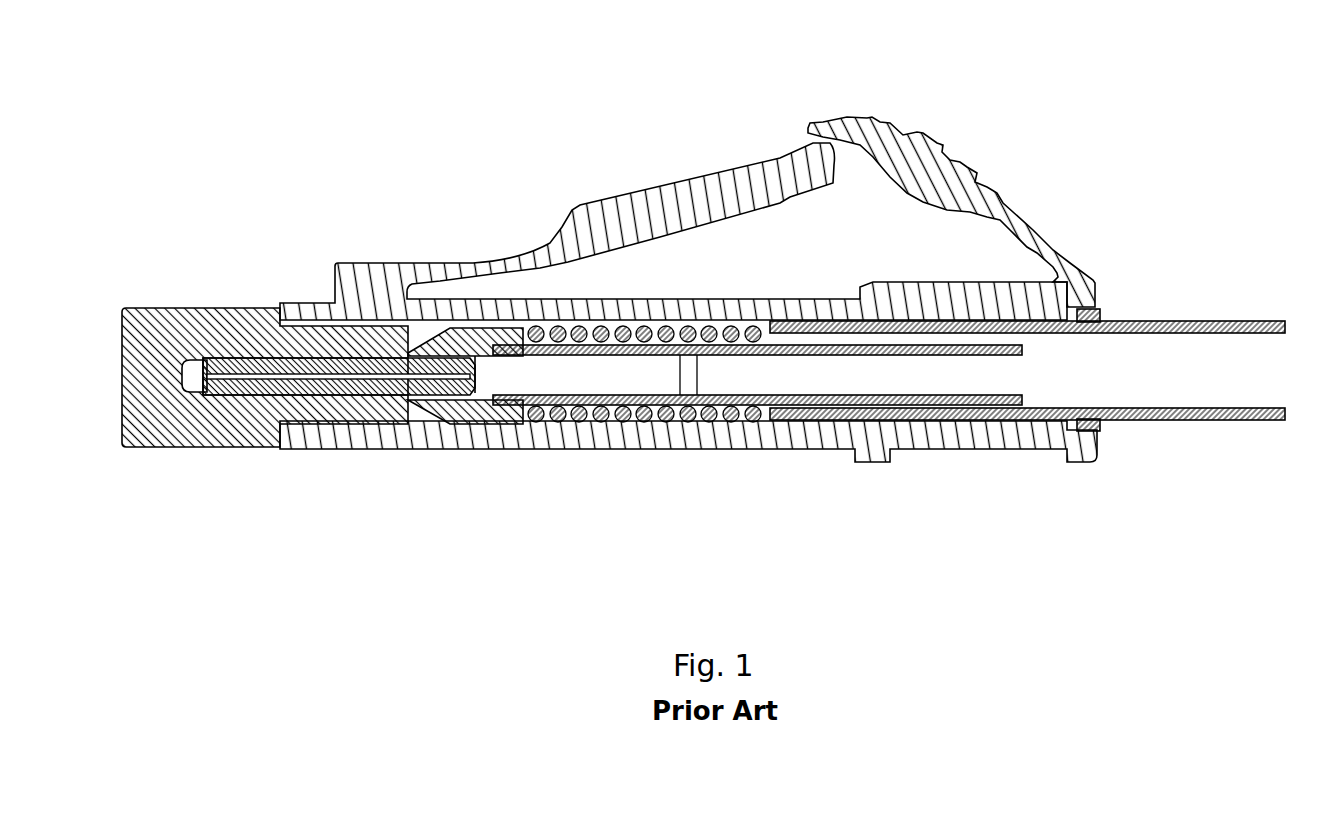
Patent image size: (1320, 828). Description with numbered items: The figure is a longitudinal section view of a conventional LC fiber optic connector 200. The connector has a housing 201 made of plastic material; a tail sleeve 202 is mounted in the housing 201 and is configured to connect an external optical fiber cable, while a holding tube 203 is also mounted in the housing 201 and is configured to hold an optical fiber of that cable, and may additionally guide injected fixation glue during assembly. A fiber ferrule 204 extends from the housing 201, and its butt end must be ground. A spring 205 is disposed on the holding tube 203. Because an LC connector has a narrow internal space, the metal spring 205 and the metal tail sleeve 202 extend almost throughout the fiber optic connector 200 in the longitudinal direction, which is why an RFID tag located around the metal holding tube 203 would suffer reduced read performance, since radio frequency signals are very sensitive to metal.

The fiber optic connector 200 is at (703, 330).
The housing 201 is at (402, 275).
The tail sleeve 202 is at (1145, 322).
The holding tube 203 is at (700, 413).
The fiber ferrule 204 is at (333, 383).
The spring 205 is at (578, 417).